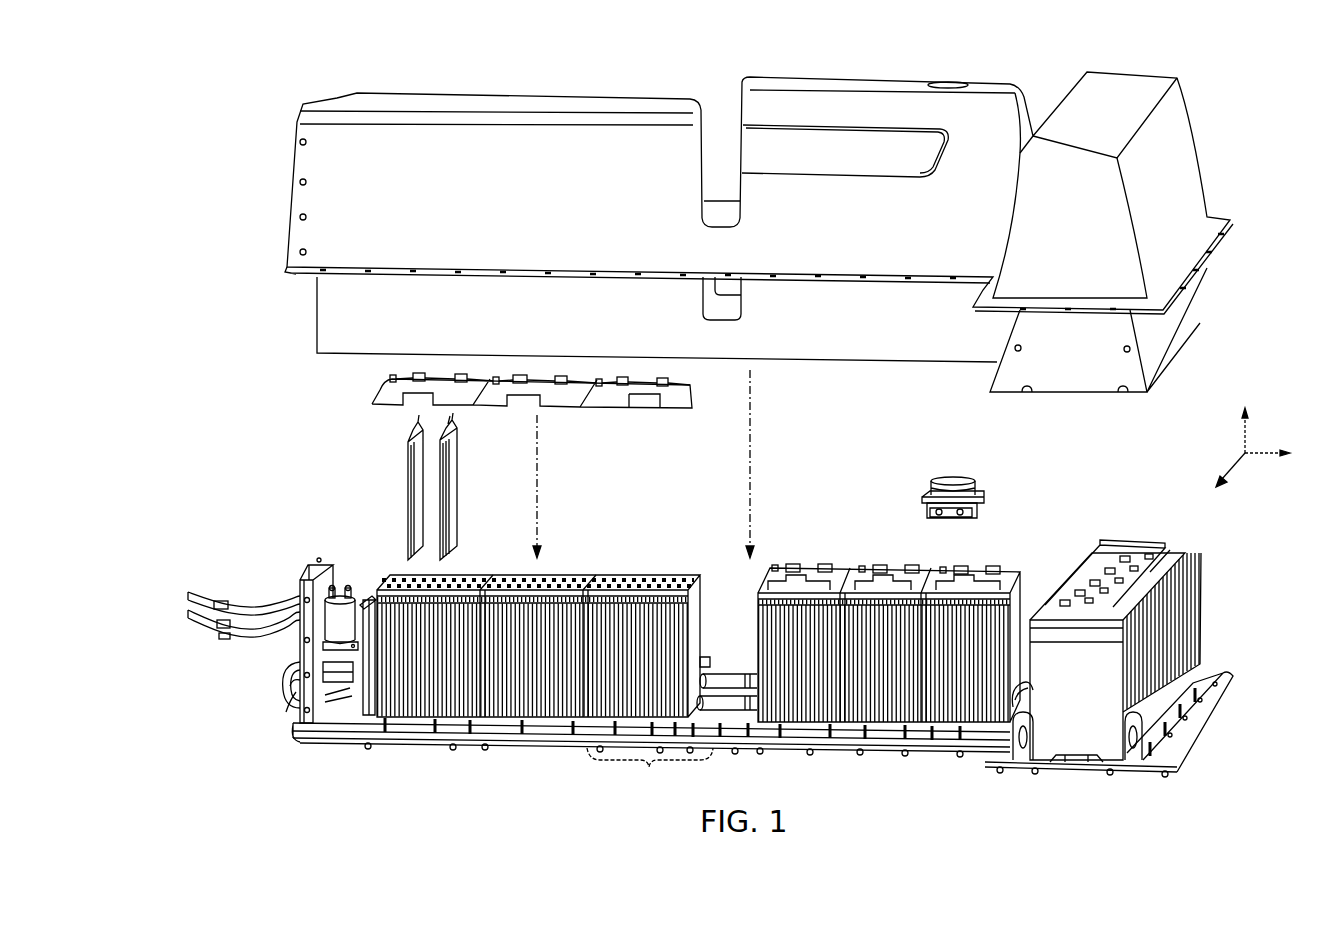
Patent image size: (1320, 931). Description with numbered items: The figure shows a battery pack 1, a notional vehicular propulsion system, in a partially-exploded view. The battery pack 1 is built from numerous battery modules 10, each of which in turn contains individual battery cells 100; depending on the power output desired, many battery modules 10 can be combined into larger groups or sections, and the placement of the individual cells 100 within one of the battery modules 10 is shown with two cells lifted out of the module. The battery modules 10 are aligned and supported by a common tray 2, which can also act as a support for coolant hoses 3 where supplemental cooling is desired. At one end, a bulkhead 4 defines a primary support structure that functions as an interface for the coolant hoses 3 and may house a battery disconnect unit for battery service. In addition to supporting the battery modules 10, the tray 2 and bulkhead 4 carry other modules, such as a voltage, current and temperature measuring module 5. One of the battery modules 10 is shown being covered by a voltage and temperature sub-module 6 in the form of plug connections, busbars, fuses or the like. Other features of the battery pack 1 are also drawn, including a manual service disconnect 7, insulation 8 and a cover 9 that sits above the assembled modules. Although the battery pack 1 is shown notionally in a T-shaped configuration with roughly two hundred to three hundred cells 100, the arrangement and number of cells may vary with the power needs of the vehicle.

The battery pack 1 is at (224, 122).
The tray 2 is at (937, 743).
The coolant hoses 3 is at (742, 693).
The bulkhead 4 is at (299, 720).
The voltage, current and temperature measuring module 5 is at (368, 662).
The voltage and temperature sub-module 6 is at (378, 396).
The manual service disconnect 7 is at (957, 480).
The insulation 8 is at (317, 320).
The cover 9 is at (292, 200).
The battery module 10 is at (650, 774).
The battery cell 100 is at (408, 497).